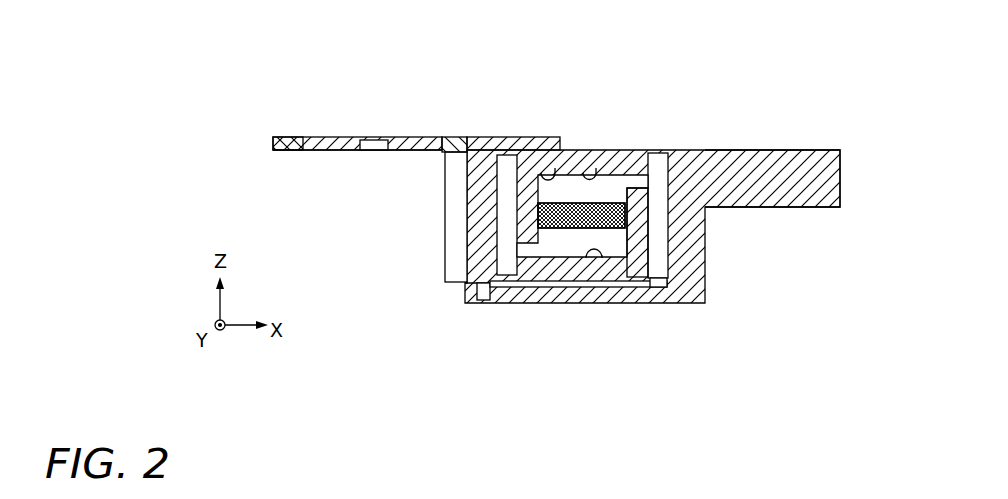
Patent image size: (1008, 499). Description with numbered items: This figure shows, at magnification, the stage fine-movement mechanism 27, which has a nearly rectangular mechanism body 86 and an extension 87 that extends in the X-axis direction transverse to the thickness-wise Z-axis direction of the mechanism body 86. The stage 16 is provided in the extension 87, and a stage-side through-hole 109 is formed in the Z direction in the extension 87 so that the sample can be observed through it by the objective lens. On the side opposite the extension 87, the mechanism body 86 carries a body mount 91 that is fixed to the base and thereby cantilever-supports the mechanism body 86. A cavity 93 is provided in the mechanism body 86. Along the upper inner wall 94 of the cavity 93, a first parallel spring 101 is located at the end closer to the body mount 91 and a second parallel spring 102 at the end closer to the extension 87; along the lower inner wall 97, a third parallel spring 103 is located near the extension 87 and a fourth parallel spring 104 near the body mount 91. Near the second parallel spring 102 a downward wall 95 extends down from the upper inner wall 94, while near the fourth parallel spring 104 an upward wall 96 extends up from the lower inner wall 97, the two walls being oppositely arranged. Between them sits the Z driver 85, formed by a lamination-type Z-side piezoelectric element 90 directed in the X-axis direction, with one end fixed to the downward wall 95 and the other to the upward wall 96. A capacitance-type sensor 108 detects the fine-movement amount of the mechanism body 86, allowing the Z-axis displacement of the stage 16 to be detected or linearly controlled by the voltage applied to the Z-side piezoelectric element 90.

The stage 16 is at (357, 146).
The stage fine-movement mechanism 27 is at (556, 187).
The Z driver 85 is at (605, 186).
The mechanism body 86 is at (652, 181).
The extension 87 is at (454, 133).
The Z-side piezoelectric element 90 is at (614, 229).
The body mount 91 is at (808, 148).
The cavity 93 is at (583, 173).
The upper inner wall 94 is at (541, 173).
The downward wall 95 is at (536, 201).
The upward wall 96 is at (645, 235).
The lower inner wall 97 is at (586, 258).
The first parallel spring 101 is at (656, 149).
The second parallel spring 102 is at (505, 149).
The third parallel spring 103 is at (512, 302).
The fourth parallel spring 104 is at (659, 288).
The capacitance-type sensor 108 is at (549, 324).
The stage-side through-hole 109 is at (314, 152).